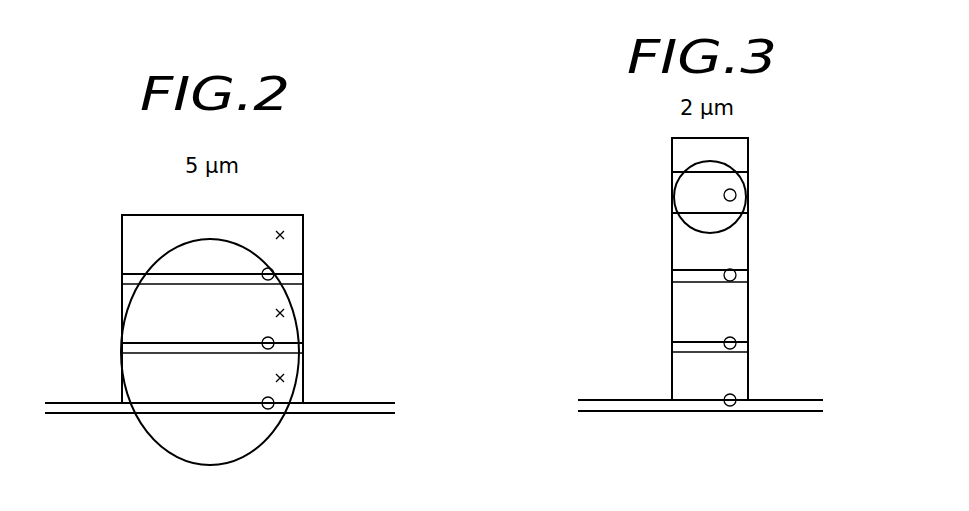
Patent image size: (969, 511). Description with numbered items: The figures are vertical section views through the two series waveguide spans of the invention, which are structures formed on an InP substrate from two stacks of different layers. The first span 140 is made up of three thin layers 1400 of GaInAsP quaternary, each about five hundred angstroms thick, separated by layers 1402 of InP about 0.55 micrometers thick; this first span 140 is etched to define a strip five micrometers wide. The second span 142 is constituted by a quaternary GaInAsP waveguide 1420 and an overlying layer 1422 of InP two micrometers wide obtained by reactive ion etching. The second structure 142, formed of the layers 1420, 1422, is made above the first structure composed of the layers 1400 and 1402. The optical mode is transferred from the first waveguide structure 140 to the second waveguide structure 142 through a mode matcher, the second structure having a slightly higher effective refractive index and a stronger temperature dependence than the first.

In FIG. 2, the first span 140 is at (352, 251).
In FIG. 3, the second span 142 is at (652, 205).
In FIG. 2, the thin layers 1400 is at (120, 279).
In FIG. 3, the thin layers 1400 is at (740, 278).
In FIG. 2, the layers of InP 1402 is at (285, 232).
In FIG. 3, the layers of InP 1402 is at (690, 248).
In FIG. 3, the quaternary GaInAsP waveguide 1420 is at (740, 195).
In FIG. 3, the overlying layer of InP 1422 is at (693, 156).